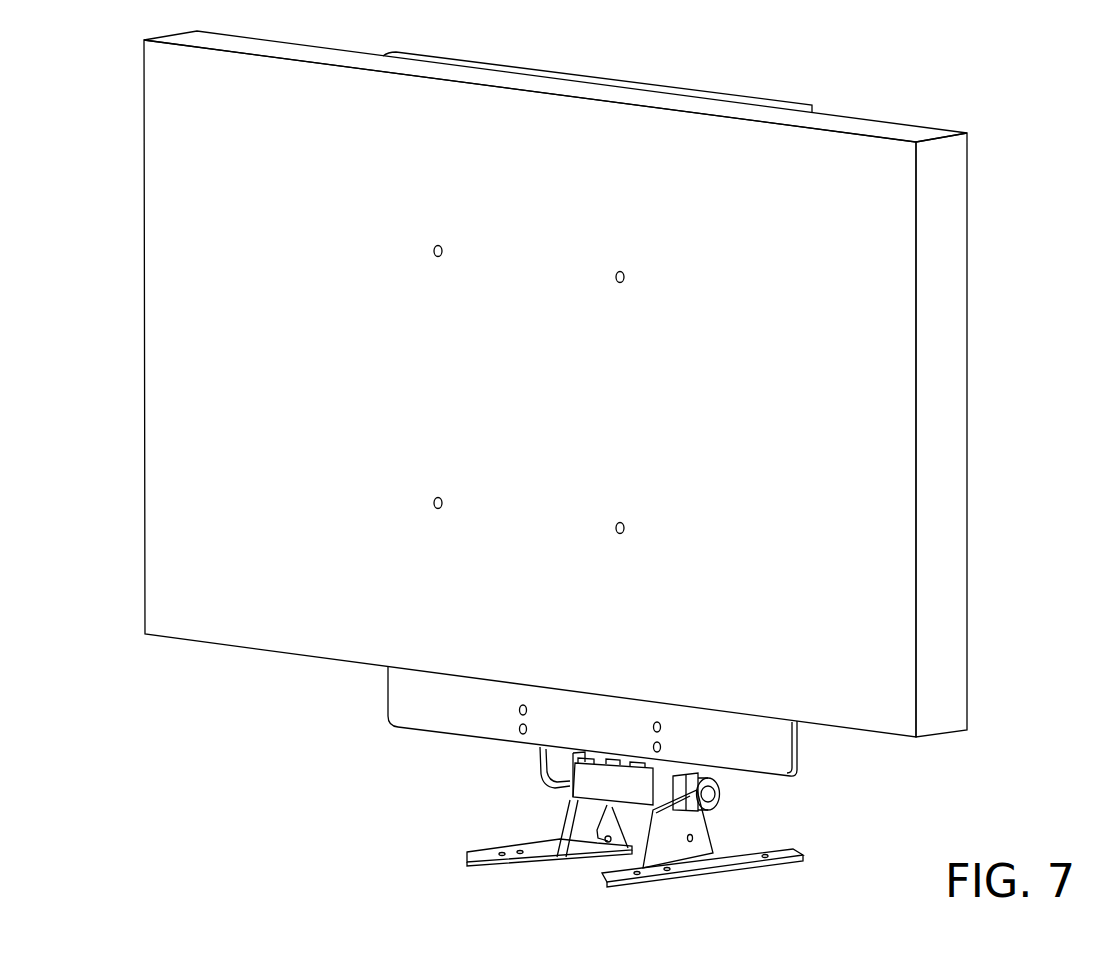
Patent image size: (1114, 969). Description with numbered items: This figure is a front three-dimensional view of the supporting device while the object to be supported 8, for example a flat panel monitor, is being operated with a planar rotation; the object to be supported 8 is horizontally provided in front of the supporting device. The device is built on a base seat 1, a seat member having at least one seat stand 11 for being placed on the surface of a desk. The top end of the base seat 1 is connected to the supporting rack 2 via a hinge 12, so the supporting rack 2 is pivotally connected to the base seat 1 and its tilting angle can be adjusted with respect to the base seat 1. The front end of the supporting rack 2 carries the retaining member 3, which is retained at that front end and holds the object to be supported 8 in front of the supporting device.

The object to be supported 8 is at (883, 302).
The retaining member 3 is at (782, 748).
The supporting rack 2 is at (562, 758).
The base seat 1 is at (583, 818).
The hinge 12 is at (721, 789).
The seat stand 11 is at (735, 860).